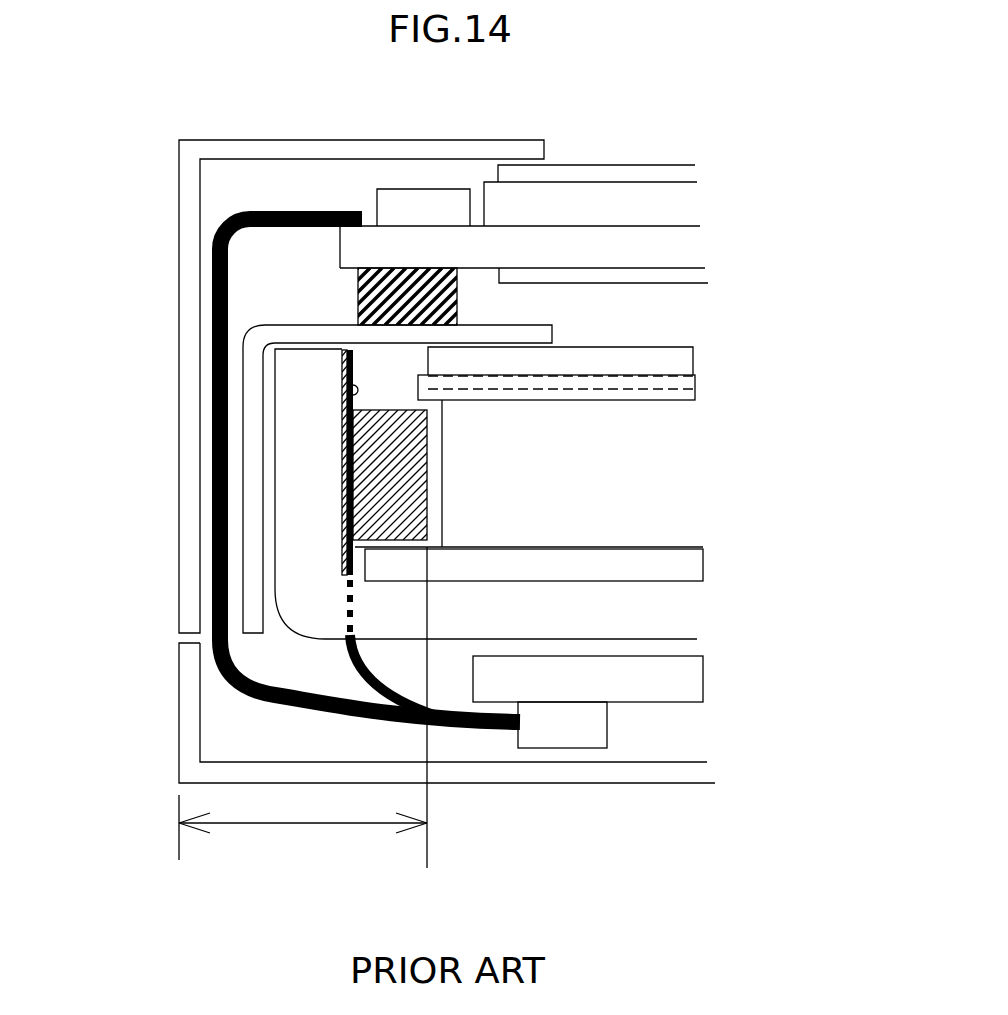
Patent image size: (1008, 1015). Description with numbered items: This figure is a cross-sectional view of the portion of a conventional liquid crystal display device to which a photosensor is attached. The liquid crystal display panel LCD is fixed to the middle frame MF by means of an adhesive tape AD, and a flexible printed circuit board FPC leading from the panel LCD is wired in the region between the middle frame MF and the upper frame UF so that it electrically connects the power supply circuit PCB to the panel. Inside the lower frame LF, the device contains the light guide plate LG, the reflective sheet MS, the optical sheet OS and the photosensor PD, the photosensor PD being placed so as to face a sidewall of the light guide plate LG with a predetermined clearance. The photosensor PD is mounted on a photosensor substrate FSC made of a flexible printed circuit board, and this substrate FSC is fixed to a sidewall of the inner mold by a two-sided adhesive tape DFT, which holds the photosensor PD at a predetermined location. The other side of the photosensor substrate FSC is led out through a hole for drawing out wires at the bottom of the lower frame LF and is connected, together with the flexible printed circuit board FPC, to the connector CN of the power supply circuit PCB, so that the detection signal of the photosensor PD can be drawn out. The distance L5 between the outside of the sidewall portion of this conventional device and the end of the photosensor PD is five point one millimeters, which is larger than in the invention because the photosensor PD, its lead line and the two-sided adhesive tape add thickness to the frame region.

The upper frame UF is at (188, 182).
The adhesive tape AD is at (358, 298).
The middle frame MF is at (250, 412).
The two-sided adhesive tape DFT is at (340, 488).
The photosensor PD is at (383, 463).
The flexible printed circuit board FPC is at (230, 683).
The photosensor substrate FSC is at (368, 683).
The liquid crystal display panel LCD is at (725, 148).
The optical sheet OS is at (707, 343).
The light guide plate LG is at (693, 468).
The reflective sheet MS is at (693, 563).
The lower frame LF is at (693, 612).
The power supply circuit PCB is at (693, 678).
The connector CN is at (598, 732).
The distance L5 is at (303, 710).